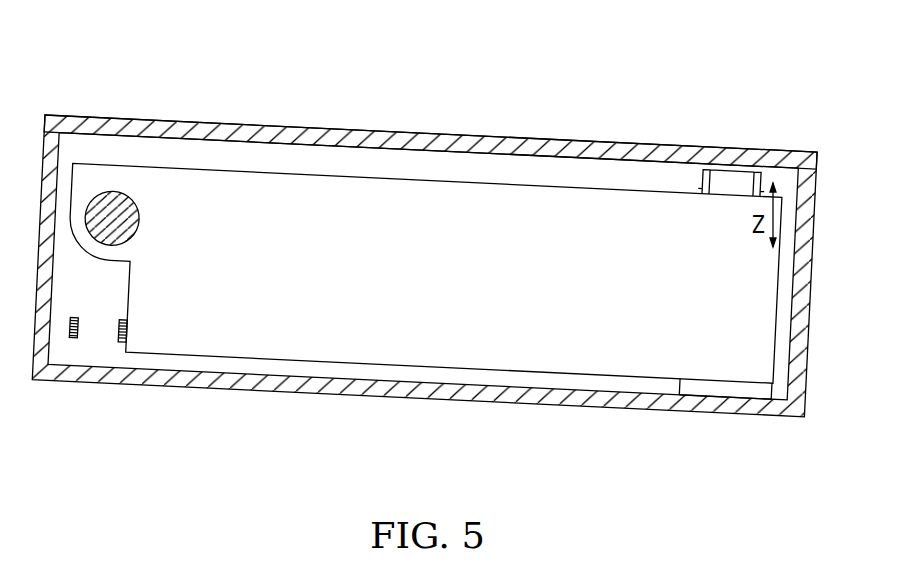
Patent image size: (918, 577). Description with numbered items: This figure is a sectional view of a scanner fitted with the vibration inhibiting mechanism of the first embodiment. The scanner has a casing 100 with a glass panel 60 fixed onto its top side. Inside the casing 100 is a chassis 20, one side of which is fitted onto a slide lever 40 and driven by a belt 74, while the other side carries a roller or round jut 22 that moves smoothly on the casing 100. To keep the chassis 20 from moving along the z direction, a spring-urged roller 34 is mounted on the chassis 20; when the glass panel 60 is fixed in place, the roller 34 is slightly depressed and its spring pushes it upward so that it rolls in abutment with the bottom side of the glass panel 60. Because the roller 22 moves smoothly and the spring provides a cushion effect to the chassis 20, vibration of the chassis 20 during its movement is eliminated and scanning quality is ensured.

The casing 100 is at (808, 247).
The glass panel 60 is at (242, 133).
The chassis 20 is at (98, 180).
The slide lever 40 is at (127, 228).
The roller 34 is at (727, 180).
The roller 22 is at (705, 387).
The belt 74 is at (75, 330).